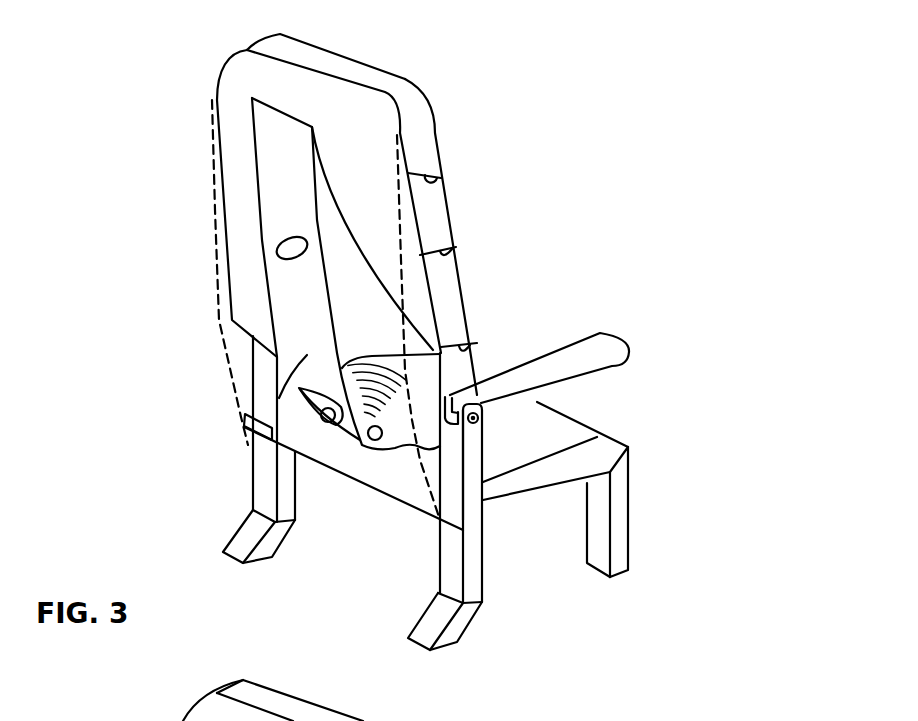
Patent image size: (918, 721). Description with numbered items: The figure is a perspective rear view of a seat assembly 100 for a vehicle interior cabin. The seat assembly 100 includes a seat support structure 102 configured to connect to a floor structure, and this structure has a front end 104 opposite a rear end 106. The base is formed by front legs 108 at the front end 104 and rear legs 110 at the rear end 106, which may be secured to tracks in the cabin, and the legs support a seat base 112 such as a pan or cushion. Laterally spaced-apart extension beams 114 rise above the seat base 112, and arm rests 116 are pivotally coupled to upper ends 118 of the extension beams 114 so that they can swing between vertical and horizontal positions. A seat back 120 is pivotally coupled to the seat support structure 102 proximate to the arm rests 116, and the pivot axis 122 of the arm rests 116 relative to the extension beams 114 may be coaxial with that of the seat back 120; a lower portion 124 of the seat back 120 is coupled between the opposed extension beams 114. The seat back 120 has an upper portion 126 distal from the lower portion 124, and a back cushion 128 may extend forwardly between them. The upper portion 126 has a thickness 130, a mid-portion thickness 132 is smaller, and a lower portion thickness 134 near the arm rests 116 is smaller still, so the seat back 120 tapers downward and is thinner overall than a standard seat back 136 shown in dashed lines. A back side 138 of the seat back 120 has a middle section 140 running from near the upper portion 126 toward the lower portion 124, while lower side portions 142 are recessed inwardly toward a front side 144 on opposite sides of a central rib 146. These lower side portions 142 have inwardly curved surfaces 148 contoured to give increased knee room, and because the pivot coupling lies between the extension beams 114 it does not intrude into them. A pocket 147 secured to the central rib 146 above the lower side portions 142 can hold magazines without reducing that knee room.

The seat assembly 100 is at (178, 85).
The seat support structure 102 is at (476, 622).
The front end 104 is at (633, 552).
The rear end 106 is at (230, 558).
The front legs 108 is at (633, 507).
The rear legs 110 is at (252, 497).
The seat base 112 is at (583, 430).
The extension beams 114 is at (298, 360).
The arm rests 116 is at (607, 343).
The upper ends 118 is at (455, 396).
The seat back 120 is at (448, 208).
The pivot axis 122 is at (487, 420).
The lower portion 124 is at (420, 430).
The upper portion 126 is at (410, 80).
The back cushion 128 is at (433, 107).
The thickness 130 is at (445, 180).
The mid-portion thickness 132 is at (460, 248).
The lower portion thickness 134 is at (462, 346).
The standard seat back 136 is at (220, 342).
The back side 138 is at (228, 194).
The middle section 140 is at (283, 271).
The lower side portions 142 is at (468, 304).
The front side 144 is at (465, 292).
The central rib 146 is at (262, 433).
The pocket 147 is at (283, 238).
The inwardly curved surfaces 148 is at (362, 447).